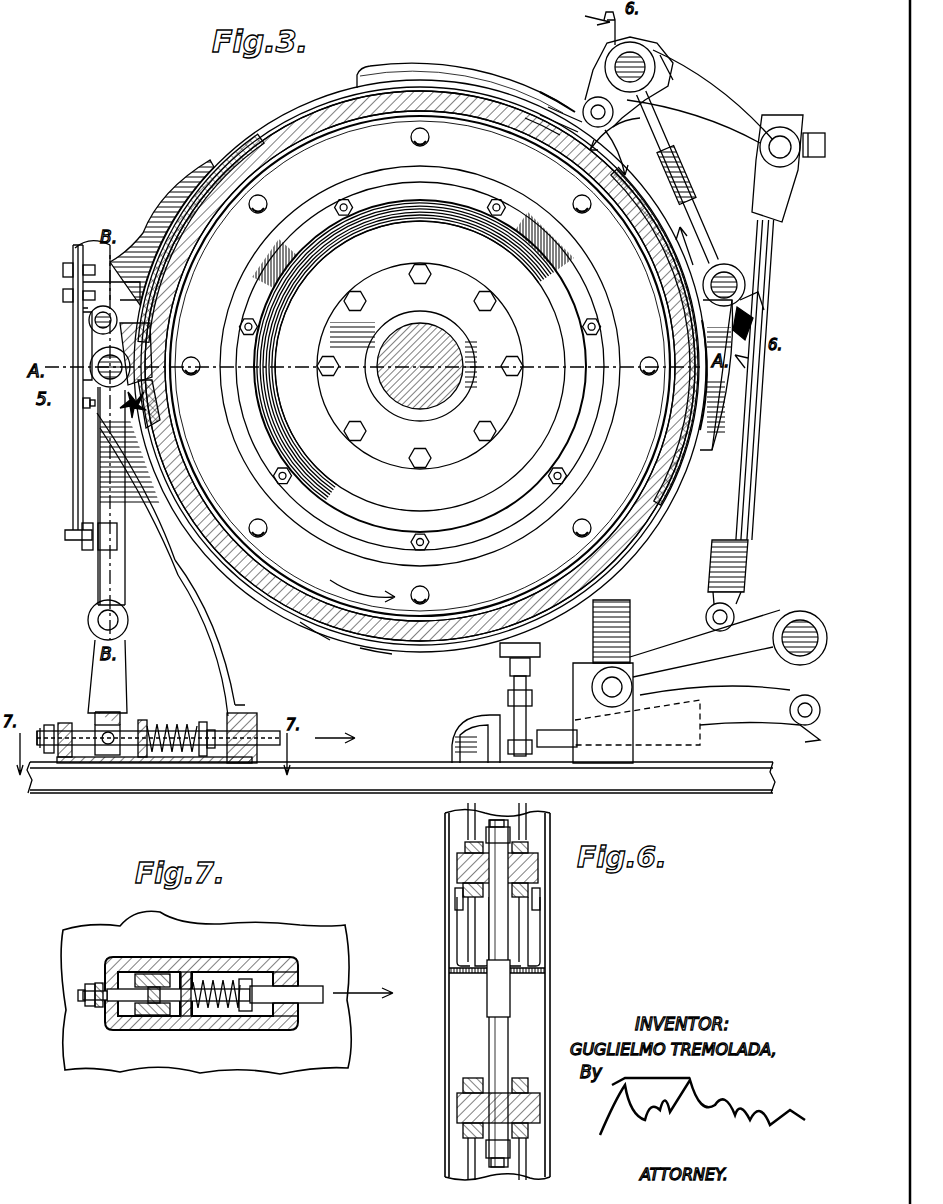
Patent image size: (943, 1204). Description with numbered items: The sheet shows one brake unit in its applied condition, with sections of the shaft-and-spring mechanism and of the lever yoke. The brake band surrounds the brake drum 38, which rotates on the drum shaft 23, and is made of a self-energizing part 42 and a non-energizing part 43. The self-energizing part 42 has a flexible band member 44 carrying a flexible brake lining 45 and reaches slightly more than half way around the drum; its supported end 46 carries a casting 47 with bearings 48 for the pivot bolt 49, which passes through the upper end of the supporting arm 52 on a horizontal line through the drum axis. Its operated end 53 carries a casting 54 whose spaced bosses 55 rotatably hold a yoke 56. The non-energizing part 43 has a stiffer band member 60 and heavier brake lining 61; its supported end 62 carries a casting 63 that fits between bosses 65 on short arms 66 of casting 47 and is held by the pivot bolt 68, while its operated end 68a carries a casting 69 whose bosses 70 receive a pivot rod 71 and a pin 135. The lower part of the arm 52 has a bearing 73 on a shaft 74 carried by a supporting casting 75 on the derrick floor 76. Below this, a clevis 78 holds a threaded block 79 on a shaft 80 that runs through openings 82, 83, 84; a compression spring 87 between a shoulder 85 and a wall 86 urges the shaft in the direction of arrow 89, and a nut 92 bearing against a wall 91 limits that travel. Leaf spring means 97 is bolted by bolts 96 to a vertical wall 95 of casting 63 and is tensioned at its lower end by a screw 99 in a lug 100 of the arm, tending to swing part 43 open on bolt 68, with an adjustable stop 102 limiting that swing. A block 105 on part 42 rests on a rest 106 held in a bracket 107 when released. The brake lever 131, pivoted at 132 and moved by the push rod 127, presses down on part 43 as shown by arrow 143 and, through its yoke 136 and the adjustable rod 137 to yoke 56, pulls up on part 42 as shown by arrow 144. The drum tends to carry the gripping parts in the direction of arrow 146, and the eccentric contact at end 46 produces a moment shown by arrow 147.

In FIG. 3, the drum shaft 23 is at (378, 378).
In FIG. 3, the brake drum 38 is at (675, 258).
In FIG. 3, the self-energizing part 42 is at (370, 646).
In FIG. 3, the non-energizing part 43 is at (425, 72).
In FIG. 3, the flexible band member 44 is at (300, 622).
In FIG. 3, the brake lining 45 is at (605, 573).
In FIG. 3, the supported or pivoted end 46 is at (155, 395).
In FIG. 3, the casting 47 is at (180, 560).
In FIG. 3, the bearings 48 is at (90, 360).
In FIG. 3, the pivot bolt or shaft 49 is at (135, 350).
In FIG. 3, the supporting arm 52 is at (97, 575).
In FIG. 3, the operated end 53 is at (690, 337).
In FIG. 3, the casting 54 is at (728, 405).
In FIG. 3, the spaced bosses 55 is at (752, 290).
In FIG. 3, the yoke 56 is at (727, 272).
In FIG. 6, the yoke 56 is at (535, 1103).
In FIG. 3, the band member 60 is at (290, 128).
In FIG. 3, the brake lining 61 is at (300, 112).
In FIG. 3, the supported or pivoted end 62 is at (172, 292).
In FIG. 3, the casting 63 is at (175, 215).
In FIG. 3, the bosses 65 is at (63, 297).
In FIG. 3, the short arms 66 is at (88, 338).
In FIG. 3, the pivot bolt 68 is at (107, 310).
In FIG. 3, the operated end 68a is at (545, 125).
In FIG. 3, the casting 69 is at (507, 78).
In FIG. 3, the bosses 70 is at (656, 62).
In FIG. 6, the bosses 70 is at (528, 848).
In FIG. 3, the pivot rod 71 is at (592, 98).
In FIG. 3, the bearing portion 73 is at (88, 624).
In FIG. 3, the shaft 74 is at (118, 620).
In FIG. 3, the supporting structure or casting 75 is at (198, 678).
In FIG. 3, the supporting base or floor of the derrick 76 is at (300, 795).
In FIG. 3, the clevis 78 is at (108, 758).
In FIG. 7, the clevis 78 is at (184, 990).
In FIG. 7, the threaded block 79 is at (150, 1016).
In FIG. 3, the shaft 80 is at (252, 718).
In FIG. 7, the shaft 80 is at (195, 985).
In FIG. 3, the opening 82 is at (60, 760).
In FIG. 7, the opening 82 is at (90, 1008).
In FIG. 3, the opening 83 is at (150, 760).
In FIG. 7, the opening 83 is at (185, 1010).
In FIG. 3, the opening 84 is at (238, 760).
In FIG. 7, the opening 84 is at (283, 1030).
In FIG. 3, the shoulder 85 is at (206, 722).
In FIG. 7, the shoulder 85 is at (252, 985).
In FIG. 3, the wall 86 is at (142, 720).
In FIG. 3, the compression spring 87 is at (172, 760).
In FIG. 7, the compression spring 87 is at (230, 985).
In FIG. 3, the arrow 89 is at (337, 722).
In FIG. 7, the arrow 89 is at (363, 972).
In FIG. 3, the wall 91 is at (64, 723).
In FIG. 7, the wall 91 is at (99, 983).
In FIG. 3, the nut 92 is at (46, 725).
In FIG. 7, the nut 92 is at (85, 995).
In FIG. 3, the vertical wall 95 is at (80, 246).
In FIG. 3, the bolts 96 is at (63, 270).
In FIG. 3, the spring means 97 is at (74, 258).
In FIG. 3, the bolt or machine screw 99 is at (84, 545).
In FIG. 3, the lug portion 100 is at (117, 545).
In FIG. 3, the adjustable stop means 102 is at (86, 410).
In FIG. 3, the block 105 is at (540, 648).
In FIG. 3, the rest 106 is at (510, 668).
In FIG. 3, the supporting bracket 107 is at (478, 726).
In FIG. 3, the push rod 127 is at (742, 497).
In FIG. 3, the brake lever 131 is at (716, 92).
In FIG. 3, the pivotal connection 132 is at (784, 140).
In FIG. 3, the pin 135 is at (590, 112).
In FIG. 3, the yoke 136 is at (638, 60).
In FIG. 6, the yoke 136 is at (530, 873).
In FIG. 3, the adjustable rod 137 is at (690, 180).
In FIG. 6, the adjustable rod 137 is at (503, 1030).
In FIG. 3, the arrow 143 is at (642, 120).
In FIG. 3, the arrow 144 is at (690, 240).
In FIG. 3, the arrow 146 is at (362, 585).
In FIG. 3, the arrow 147 is at (140, 410).